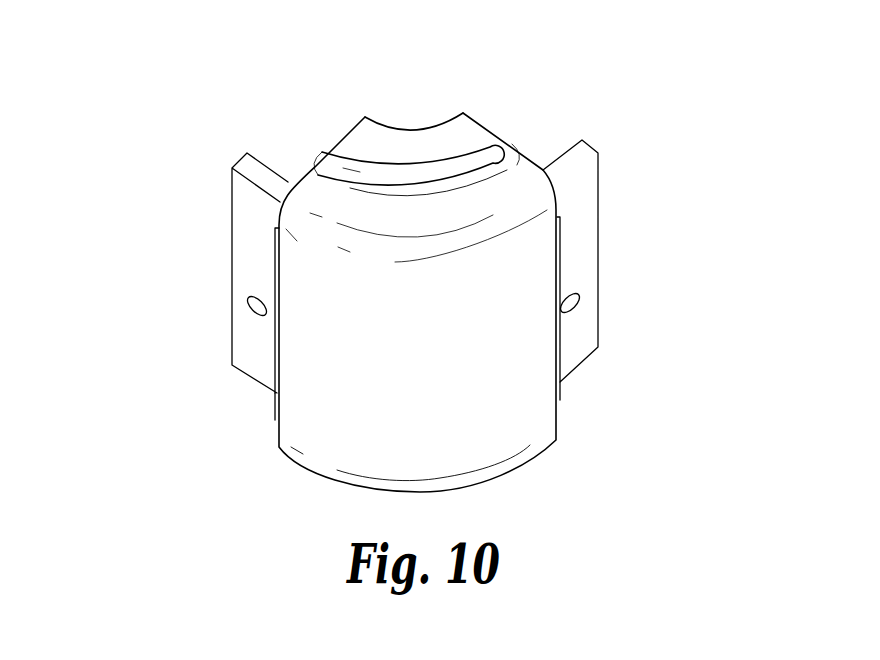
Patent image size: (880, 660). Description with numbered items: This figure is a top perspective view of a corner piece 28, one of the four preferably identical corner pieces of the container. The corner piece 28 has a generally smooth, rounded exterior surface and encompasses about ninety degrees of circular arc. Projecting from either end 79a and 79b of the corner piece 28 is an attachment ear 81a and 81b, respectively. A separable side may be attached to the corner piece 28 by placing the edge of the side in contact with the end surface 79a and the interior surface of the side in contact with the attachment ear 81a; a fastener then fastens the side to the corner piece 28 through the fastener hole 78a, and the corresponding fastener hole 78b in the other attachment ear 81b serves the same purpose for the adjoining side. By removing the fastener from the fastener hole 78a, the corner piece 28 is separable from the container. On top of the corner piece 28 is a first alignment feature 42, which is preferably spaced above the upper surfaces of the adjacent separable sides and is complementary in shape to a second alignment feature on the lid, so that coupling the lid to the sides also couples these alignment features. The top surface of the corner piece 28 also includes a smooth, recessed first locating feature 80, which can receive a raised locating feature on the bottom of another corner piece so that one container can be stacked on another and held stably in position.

The corner piece 28 is at (574, 90).
The first alignment feature 42 is at (315, 165).
The first locating feature 80 is at (480, 166).
The attachment ear 81a is at (598, 240).
The attachment ear 81b is at (231, 205).
The fastener hole 78a is at (575, 307).
The fastener hole 78b is at (258, 311).
The end 79a is at (560, 398).
The end 79b is at (272, 403).